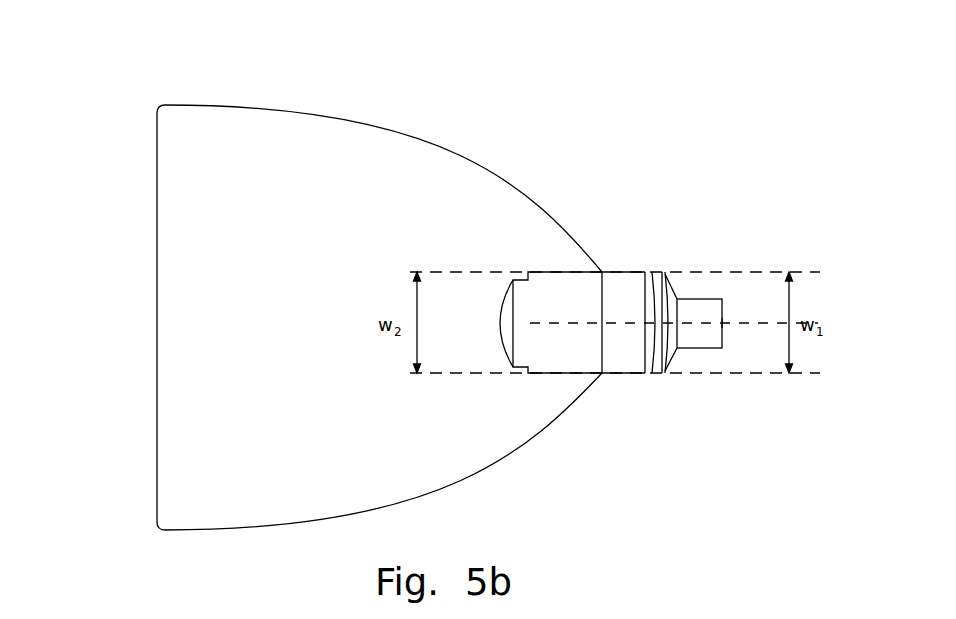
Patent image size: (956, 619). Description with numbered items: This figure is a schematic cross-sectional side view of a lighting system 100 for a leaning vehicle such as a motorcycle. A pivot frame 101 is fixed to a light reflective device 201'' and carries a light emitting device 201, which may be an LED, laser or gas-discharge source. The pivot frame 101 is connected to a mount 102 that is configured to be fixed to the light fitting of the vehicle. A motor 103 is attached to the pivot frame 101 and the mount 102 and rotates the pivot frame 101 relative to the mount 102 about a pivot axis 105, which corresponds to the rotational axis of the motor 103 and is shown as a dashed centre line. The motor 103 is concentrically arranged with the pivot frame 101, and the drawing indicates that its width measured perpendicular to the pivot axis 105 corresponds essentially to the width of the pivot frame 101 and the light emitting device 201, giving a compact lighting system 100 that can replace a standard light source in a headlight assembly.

The lighting system 100 is at (132, 52).
The pivot frame 101 is at (561, 272).
The mount 102 is at (700, 348).
The motor 103 is at (636, 403).
The pivot axis 105 is at (725, 323).
The light emitting device 201 is at (454, 349).
The light reflective device 201'' is at (379, 313).